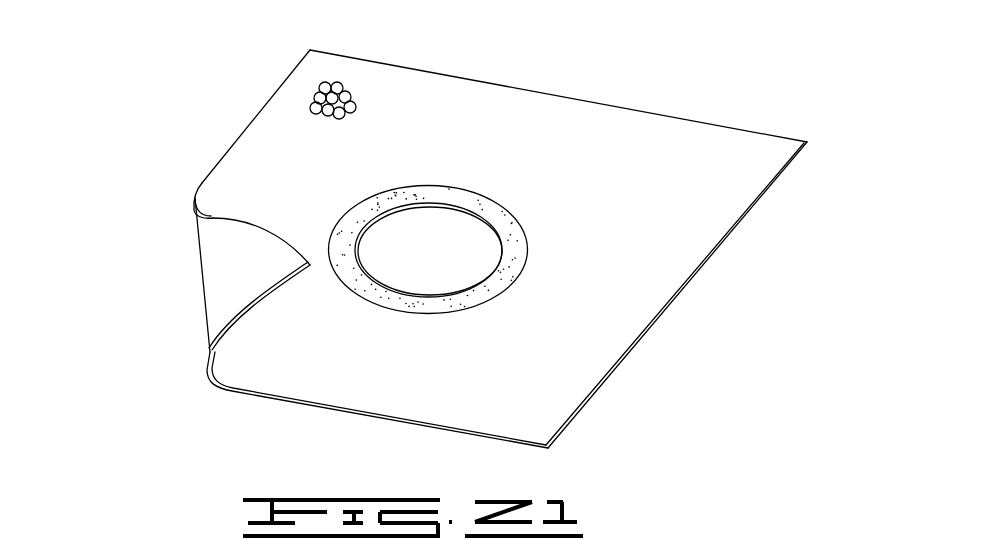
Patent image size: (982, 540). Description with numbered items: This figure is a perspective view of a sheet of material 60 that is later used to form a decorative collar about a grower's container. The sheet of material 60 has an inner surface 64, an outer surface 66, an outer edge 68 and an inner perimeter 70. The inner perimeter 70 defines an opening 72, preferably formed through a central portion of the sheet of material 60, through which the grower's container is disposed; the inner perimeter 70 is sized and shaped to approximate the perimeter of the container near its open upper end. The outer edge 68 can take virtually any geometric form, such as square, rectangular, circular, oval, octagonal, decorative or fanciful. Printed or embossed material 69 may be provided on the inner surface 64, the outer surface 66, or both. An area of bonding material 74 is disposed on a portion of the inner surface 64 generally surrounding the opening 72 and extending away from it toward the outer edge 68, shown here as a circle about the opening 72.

The sheet of material 60 is at (207, 61).
The inner surface 64 is at (333, 365).
The outer surface 66 is at (223, 250).
The outer edge 68 is at (407, 427).
The printed or embossed material 69 is at (342, 88).
The inner perimeter 70 is at (355, 240).
The opening 72 is at (462, 257).
The area of bonding material 74 is at (433, 197).